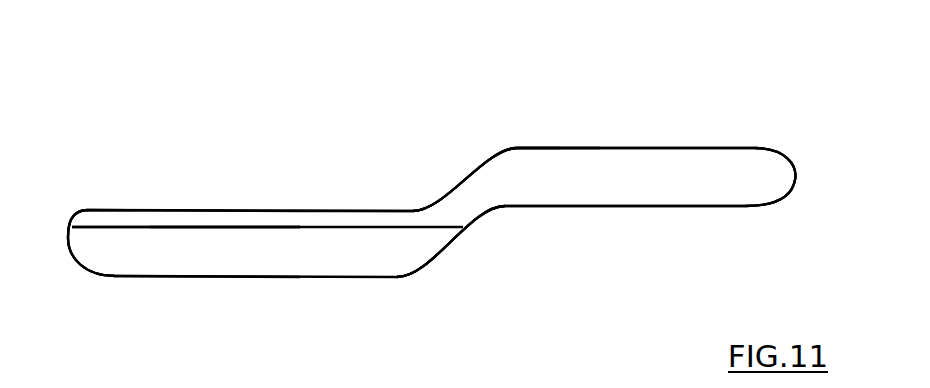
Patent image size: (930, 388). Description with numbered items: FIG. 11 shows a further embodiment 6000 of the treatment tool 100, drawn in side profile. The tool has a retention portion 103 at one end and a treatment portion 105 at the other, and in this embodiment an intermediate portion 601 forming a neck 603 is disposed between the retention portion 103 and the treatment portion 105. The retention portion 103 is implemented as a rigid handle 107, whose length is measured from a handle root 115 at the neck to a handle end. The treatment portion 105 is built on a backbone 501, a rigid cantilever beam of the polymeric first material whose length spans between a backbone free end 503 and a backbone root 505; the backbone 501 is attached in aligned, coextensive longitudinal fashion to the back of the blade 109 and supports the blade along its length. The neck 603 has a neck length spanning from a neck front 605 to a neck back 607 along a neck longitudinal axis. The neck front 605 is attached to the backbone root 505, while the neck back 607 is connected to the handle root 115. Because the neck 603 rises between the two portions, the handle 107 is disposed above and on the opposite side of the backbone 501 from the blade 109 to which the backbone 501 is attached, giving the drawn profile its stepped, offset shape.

The treatment tool 100 is at (283, 125).
The retention portion 103 is at (670, 108).
The treatment portion 105 is at (110, 178).
The handle 107 is at (705, 160).
The blade 109 is at (132, 263).
The handle root 115 is at (490, 200).
The backbone 501 is at (220, 220).
The backbone free end 503 is at (90, 220).
The backbone root 505 is at (458, 213).
The intermediate portion 601 is at (502, 242).
The neck 603 is at (482, 179).
The neck front 605 is at (440, 215).
The neck back 607 is at (520, 160).
The embodiment 6000 is at (352, 125).